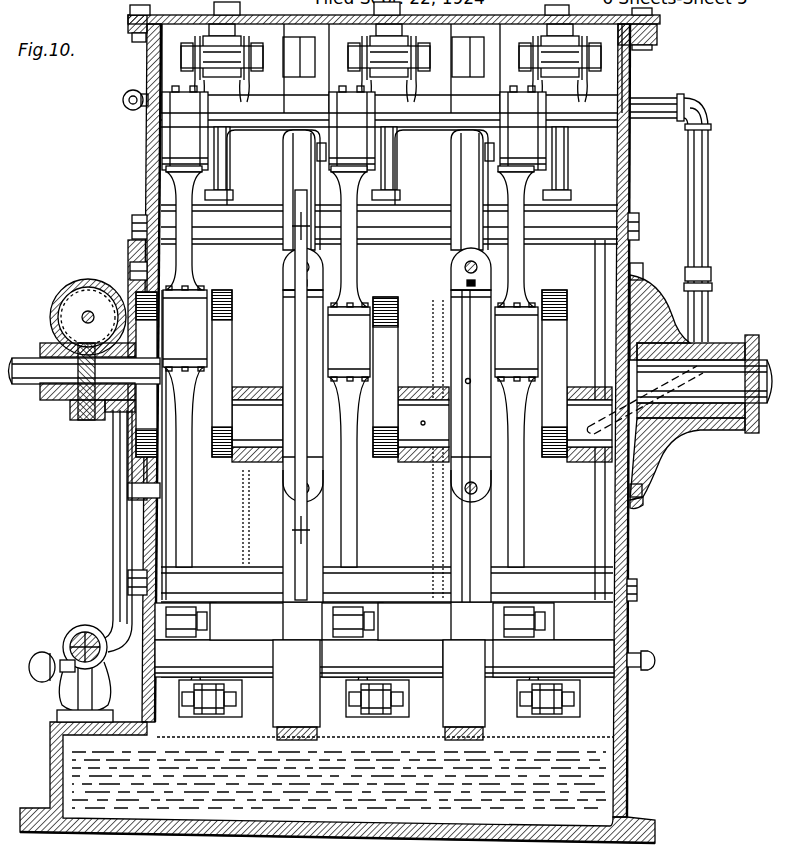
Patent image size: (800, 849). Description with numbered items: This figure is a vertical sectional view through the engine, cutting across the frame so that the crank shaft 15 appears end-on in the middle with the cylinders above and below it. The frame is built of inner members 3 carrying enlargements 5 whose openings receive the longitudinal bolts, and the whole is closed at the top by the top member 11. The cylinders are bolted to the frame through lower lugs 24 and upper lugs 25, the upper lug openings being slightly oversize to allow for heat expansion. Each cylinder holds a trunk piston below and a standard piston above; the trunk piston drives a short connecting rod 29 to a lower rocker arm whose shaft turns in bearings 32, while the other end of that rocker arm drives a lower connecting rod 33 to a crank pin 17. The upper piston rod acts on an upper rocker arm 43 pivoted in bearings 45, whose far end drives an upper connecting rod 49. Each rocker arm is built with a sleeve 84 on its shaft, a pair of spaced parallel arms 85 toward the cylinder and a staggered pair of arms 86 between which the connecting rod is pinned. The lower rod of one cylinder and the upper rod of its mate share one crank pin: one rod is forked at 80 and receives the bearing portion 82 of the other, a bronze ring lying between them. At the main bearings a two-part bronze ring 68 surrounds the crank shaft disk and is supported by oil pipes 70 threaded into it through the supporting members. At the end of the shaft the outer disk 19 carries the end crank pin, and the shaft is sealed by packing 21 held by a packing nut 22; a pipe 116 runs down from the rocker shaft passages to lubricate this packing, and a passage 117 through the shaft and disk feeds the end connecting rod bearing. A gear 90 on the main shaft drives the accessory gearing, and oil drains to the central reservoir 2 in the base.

The central reservoir 2 is at (135, 358).
The inner members 3 is at (284, 162).
The enlargements 5 is at (301, 395).
The top member 11 is at (660, 27).
The crank shaft 15 is at (23, 366).
The crank pins 17 is at (643, 502).
The outer disk 19 is at (656, 462).
The packing 21 is at (722, 342).
The packing nut 22 is at (753, 336).
The lugs 24 is at (250, 578).
The lugs 25 is at (251, 216).
The short connecting rod 29 is at (408, 704).
The bearings 32 is at (352, 435).
The connecting rods 33 is at (192, 558).
The upper rocker arms 43 is at (575, 104).
The bearings 45 is at (244, 96).
The upper connecting rods 49 is at (194, 260).
The bronze ring 68 is at (262, 470).
The oil pipes 70 is at (306, 375).
The forked portion 80 is at (200, 386).
The bearing portion 82 is at (205, 318).
The sleeve 84 is at (570, 650).
The spaced parallel arms 85 is at (386, 84).
The arms 86 is at (338, 120).
The gear 90 is at (68, 406).
The pipe 116 is at (710, 234).
The passage 117 is at (690, 372).